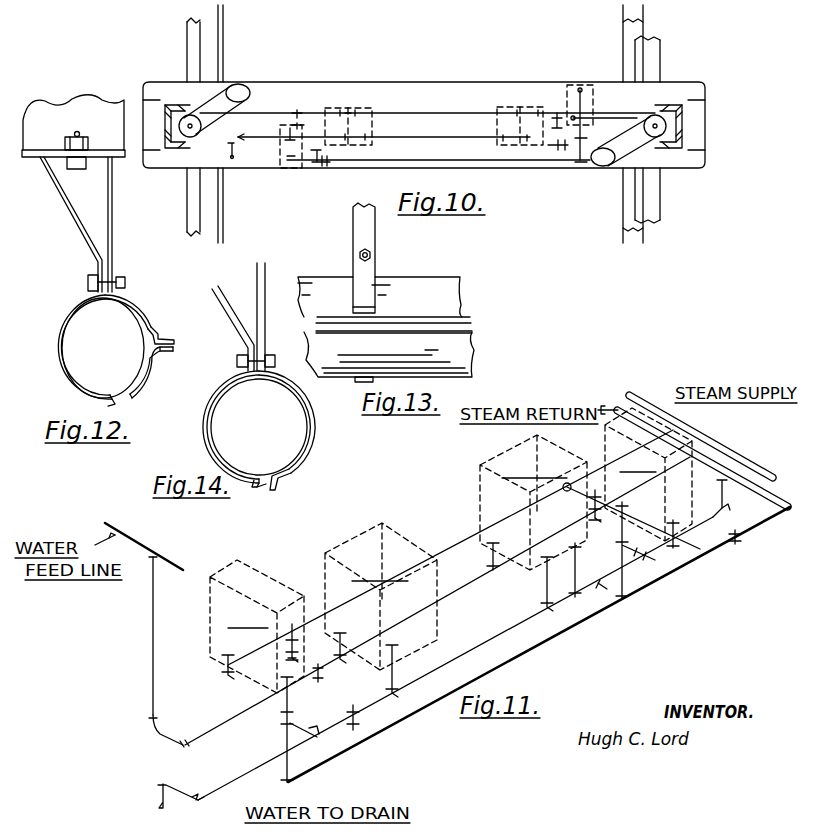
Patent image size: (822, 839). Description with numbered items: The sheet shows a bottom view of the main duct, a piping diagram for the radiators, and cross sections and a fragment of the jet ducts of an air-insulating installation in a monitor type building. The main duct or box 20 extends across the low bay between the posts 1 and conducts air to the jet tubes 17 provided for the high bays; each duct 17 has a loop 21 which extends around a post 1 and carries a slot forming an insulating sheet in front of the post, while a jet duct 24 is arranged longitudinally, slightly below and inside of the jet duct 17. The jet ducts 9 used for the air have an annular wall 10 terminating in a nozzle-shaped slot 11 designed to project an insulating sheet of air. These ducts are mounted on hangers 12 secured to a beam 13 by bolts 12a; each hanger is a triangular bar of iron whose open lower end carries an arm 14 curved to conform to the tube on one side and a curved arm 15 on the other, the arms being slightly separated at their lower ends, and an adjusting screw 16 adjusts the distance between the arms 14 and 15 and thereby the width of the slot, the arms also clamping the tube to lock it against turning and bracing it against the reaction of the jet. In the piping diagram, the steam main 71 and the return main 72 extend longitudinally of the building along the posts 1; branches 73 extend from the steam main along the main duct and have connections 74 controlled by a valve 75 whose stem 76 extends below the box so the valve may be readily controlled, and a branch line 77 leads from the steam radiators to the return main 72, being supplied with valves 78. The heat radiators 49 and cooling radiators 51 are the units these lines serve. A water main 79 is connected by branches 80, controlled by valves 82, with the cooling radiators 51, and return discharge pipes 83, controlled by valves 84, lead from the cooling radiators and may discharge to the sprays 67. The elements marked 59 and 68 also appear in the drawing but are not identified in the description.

In FIG. 10, the posts 1 is at (176, 110).
In FIG. 12, the jet duct 9 is at (125, 384).
In FIG. 14, the jet duct 9 is at (290, 443).
In FIG. 13, the jet duct 9 is at (433, 279).
In FIG. 12, the annular wall 10 is at (136, 398).
In FIG. 14, the annular wall 10 is at (290, 470).
In FIG. 12, the nozzle-shaped slot 11 is at (176, 342).
In FIG. 14, the nozzle-shaped slot 11 is at (262, 492).
In FIG. 13, the nozzle-shaped slot 11 is at (466, 323).
In FIG. 12, the hanger 12 is at (70, 212).
In FIG. 14, the hanger 12 is at (222, 296).
In FIG. 13, the hanger 12 is at (355, 227).
In FIG. 12, the bolts 12a is at (79, 134).
In FIG. 12, the beam 13 is at (35, 160).
In FIG. 12, the arm 14 is at (52, 350).
In FIG. 14, the arm 14 is at (205, 437).
In FIG. 13, the arm 14 is at (360, 384).
In FIG. 12, the curved arm 15 is at (140, 310).
In FIG. 14, the curved arm 15 is at (302, 402).
In FIG. 13, the curved arm 15 is at (355, 295).
In FIG. 12, the adjusting screw 16 is at (126, 282).
In FIG. 14, the adjusting screw 16 is at (273, 358).
In FIG. 10, the jet tube 17 is at (187, 52).
In FIG. 10, the main duct 20 is at (330, 82).
In FIG. 10, the loop 21 is at (170, 162).
In FIG. 10, the jet duct 24 is at (223, 52).
In FIG. 10, the heat radiators 49 is at (291, 170).
In FIG. 11, the heat radiators 49 is at (278, 590).
In FIG. 10, the cooling radiators 51 is at (372, 120).
In FIG. 11, the cooling radiators 51 is at (382, 523).
In FIG. 10, the belt pulley 59 is at (210, 118).
In FIG. 11, the sprays 67 is at (160, 800).
In FIG. 10, the drain pipe 68 is at (258, 113).
In FIG. 11, the drain pipe 68 is at (240, 786).
In FIG. 11, the steam main 71 is at (700, 438).
In FIG. 11, the return main 72 is at (712, 452).
In FIG. 10, the branches 73 is at (395, 168).
In FIG. 11, the branches 73 is at (452, 548).
In FIG. 11, the connections 74 is at (237, 679).
In FIG. 10, the valve 75 is at (327, 156).
In FIG. 11, the valve 75 is at (297, 636).
In FIG. 11, the stem 76 is at (298, 658).
In FIG. 10, the branch line 77 is at (410, 137).
In FIG. 11, the branch line 77 is at (508, 633).
In FIG. 11, the valves 78 is at (744, 534).
In FIG. 11, the water main 79 is at (160, 545).
In FIG. 11, the branches 80 is at (222, 731).
In FIG. 11, the valves 82 is at (323, 681).
In FIG. 11, the return discharge pipes 83 is at (398, 668).
In FIG. 11, the valves 84 is at (359, 718).